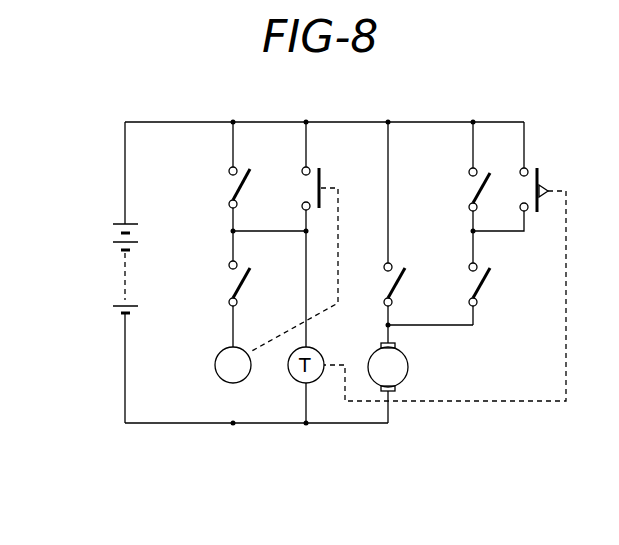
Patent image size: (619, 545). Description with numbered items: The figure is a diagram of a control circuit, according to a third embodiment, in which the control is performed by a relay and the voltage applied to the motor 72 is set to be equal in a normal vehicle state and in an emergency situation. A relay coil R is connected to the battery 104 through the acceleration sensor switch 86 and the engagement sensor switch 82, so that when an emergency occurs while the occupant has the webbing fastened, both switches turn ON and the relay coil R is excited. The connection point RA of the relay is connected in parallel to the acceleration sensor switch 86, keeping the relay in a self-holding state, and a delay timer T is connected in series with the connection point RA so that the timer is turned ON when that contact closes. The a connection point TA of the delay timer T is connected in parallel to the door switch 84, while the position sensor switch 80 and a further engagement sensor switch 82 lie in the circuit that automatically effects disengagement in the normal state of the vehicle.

The battery 104 is at (105, 288).
The acceleration sensor switch 86 is at (230, 188).
The engagement sensor switch 82 is at (250, 285).
The door switch 84 is at (470, 189).
The position sensor switch 80 is at (401, 285).
The motor 72 is at (409, 367).
The connection point of the relay RA is at (322, 183).
The a connection point of the delay timer TA is at (541, 181).